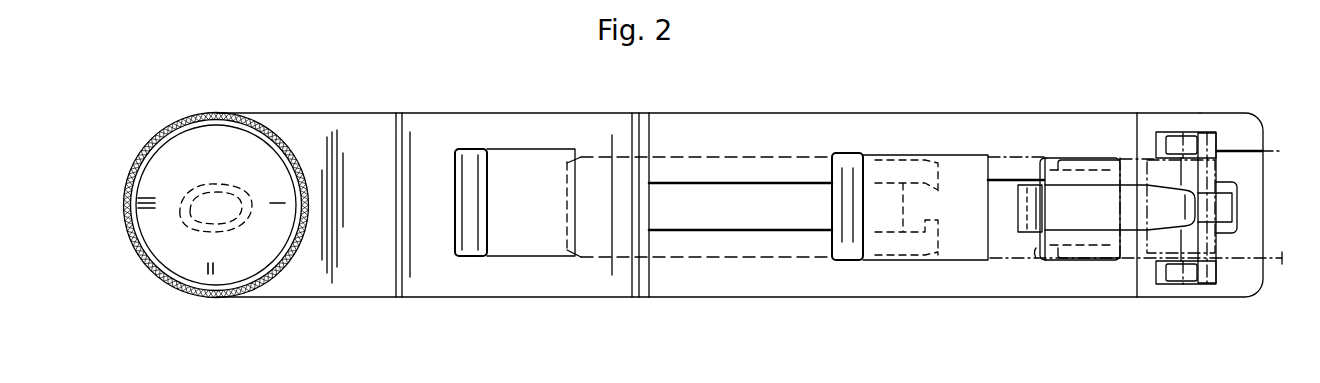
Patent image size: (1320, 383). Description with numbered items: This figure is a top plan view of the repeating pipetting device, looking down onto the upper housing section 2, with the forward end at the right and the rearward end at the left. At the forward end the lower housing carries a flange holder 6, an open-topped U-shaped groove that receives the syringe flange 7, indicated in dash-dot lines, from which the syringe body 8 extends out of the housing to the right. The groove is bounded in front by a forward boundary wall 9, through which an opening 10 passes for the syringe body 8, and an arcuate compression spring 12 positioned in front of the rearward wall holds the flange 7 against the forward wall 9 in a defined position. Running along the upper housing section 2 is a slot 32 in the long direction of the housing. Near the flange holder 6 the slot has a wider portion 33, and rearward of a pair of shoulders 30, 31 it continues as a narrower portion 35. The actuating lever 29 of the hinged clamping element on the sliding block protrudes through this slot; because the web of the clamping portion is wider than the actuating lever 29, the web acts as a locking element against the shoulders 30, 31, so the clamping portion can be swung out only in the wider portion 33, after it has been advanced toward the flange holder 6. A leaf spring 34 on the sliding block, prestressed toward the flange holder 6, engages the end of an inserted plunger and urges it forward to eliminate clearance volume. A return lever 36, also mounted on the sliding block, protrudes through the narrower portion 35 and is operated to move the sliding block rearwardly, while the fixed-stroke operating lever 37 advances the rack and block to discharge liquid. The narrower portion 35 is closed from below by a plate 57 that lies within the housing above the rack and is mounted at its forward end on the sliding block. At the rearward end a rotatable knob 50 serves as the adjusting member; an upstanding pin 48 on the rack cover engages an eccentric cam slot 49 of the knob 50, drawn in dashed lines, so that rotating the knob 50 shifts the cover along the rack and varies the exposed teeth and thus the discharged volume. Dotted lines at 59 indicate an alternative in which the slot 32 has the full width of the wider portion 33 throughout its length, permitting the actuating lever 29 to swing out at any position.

The upper housing section 2 is at (586, 112).
The flange holder 6 is at (1186, 195).
The syringe flange 7 is at (1212, 150).
The syringe body 8 is at (1283, 264).
The forward boundary wall 9 is at (1250, 127).
The opening 10 is at (1235, 264).
The arcuate compression spring 12 is at (1183, 231).
The actuating lever 29 is at (1130, 197).
The shoulder 30 is at (1045, 165).
The shoulder 31 is at (1037, 250).
The slot 32 is at (1003, 172).
The wider portion 33 is at (1125, 253).
The leaf spring 34 is at (1023, 207).
The narrower portion 35 is at (765, 196).
The return lever 36 is at (851, 163).
The operating lever 37 is at (471, 168).
The upstanding pin 48 is at (247, 190).
The eccentric cam slot 49 is at (193, 186).
The rotatable knob 50 is at (236, 140).
The plate 57 is at (686, 160).
The dotted lines 59 is at (1023, 157).